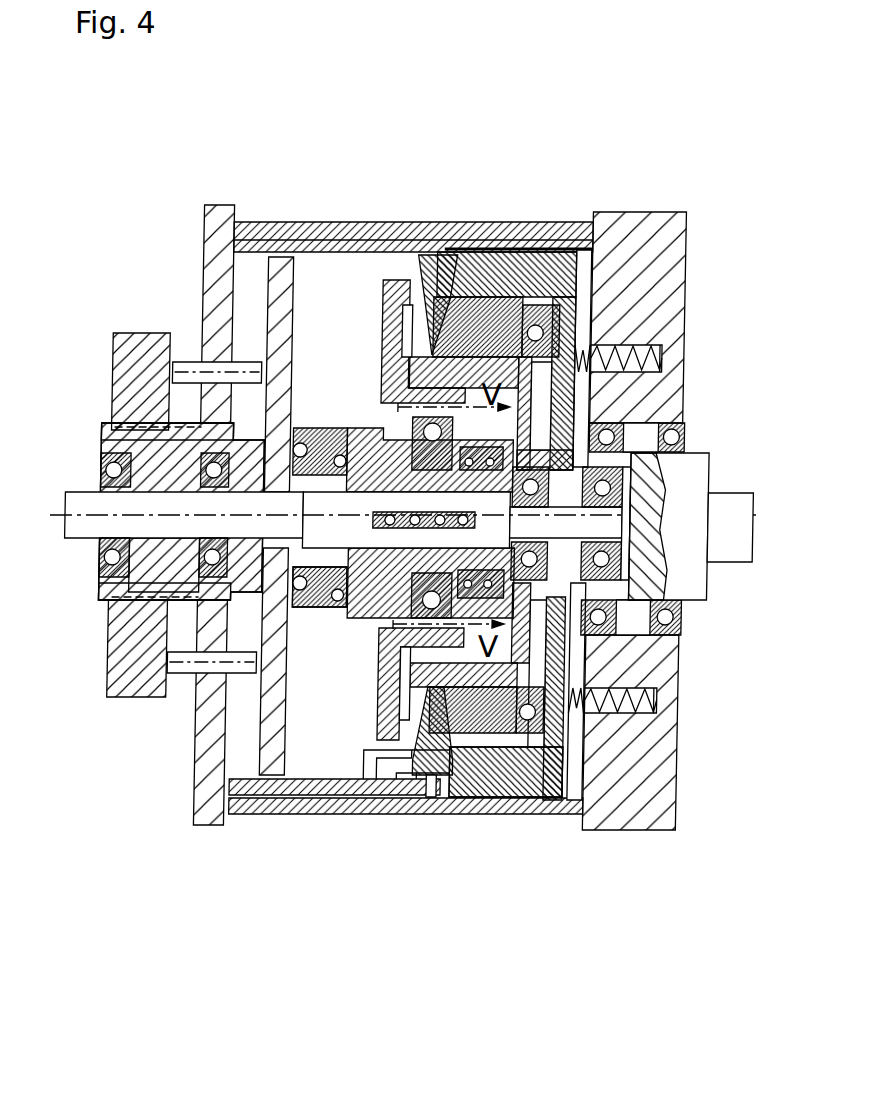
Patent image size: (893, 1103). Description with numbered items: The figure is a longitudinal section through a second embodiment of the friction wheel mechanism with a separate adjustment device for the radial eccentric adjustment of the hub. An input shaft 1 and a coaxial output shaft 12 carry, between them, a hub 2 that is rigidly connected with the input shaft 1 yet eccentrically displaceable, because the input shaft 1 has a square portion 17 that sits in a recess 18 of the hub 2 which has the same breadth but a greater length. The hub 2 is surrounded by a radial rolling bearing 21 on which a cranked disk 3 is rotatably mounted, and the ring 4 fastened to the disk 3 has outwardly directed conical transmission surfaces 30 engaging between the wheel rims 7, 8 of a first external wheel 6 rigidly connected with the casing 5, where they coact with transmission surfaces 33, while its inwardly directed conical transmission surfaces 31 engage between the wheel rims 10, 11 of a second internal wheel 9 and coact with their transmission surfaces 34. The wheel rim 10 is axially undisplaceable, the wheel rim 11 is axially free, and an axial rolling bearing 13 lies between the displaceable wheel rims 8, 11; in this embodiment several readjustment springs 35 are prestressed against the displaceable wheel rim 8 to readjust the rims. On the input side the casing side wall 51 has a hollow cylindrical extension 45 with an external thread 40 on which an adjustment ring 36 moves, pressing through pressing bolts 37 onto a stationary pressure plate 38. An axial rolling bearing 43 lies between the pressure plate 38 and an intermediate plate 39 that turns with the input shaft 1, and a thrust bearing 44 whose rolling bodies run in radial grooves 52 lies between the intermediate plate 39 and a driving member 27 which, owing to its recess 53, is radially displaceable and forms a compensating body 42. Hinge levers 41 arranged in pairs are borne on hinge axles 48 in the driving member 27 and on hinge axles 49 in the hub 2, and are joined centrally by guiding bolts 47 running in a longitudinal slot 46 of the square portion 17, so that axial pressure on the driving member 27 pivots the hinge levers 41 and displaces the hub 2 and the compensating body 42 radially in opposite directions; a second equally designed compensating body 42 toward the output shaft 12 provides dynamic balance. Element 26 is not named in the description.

The input shaft 1 is at (70, 521).
The hub 2 is at (430, 612).
The cranked disk 3 is at (362, 582).
The ring 4 is at (392, 592).
The casing 5 is at (268, 236).
The first external wheel 6 is at (431, 782).
The wheel rim 7 is at (393, 752).
The wheel rim 8 is at (440, 787).
The second internal wheel 9 is at (480, 320).
The wheel rim 10 is at (409, 370).
The wheel rim 11 is at (532, 262).
The output shaft 12 is at (727, 507).
The axial rolling bearing 13 is at (552, 313).
The square portion 17 is at (630, 538).
The recess 18 is at (440, 655).
The radial rolling bearing 21 is at (383, 607).
The end block 26 is at (668, 790).
The driving member 27 is at (326, 617).
The conical transmission surfaces 30 is at (385, 705).
The conical transmission surfaces 31 is at (440, 290).
The transmission surfaces 33 is at (405, 770).
The transmission surfaces 34 is at (453, 300).
The readjustment springs 35 is at (660, 350).
The adjustment ring 36 is at (120, 664).
The pressing bolts 37 is at (187, 365).
The stationary pressure plate 38 is at (281, 280).
The intermediate plate 39 is at (323, 432).
The external thread 40 is at (150, 610).
The hinge levers 41 is at (749, 640).
The compensating body 42 is at (356, 428).
The axial rolling bearing 43 is at (298, 449).
The thrust bearing 44 is at (338, 460).
The hollow cylindrical extension 45 is at (117, 440).
The longitudinal slot 46 is at (396, 300).
The guiding bolt 47 is at (600, 567).
The hinge axles 48 is at (397, 615).
The hinge axles 49 is at (541, 420).
The casing side wall 51 is at (205, 807).
The grooves 52 is at (322, 585).
The recess 53 is at (714, 428).